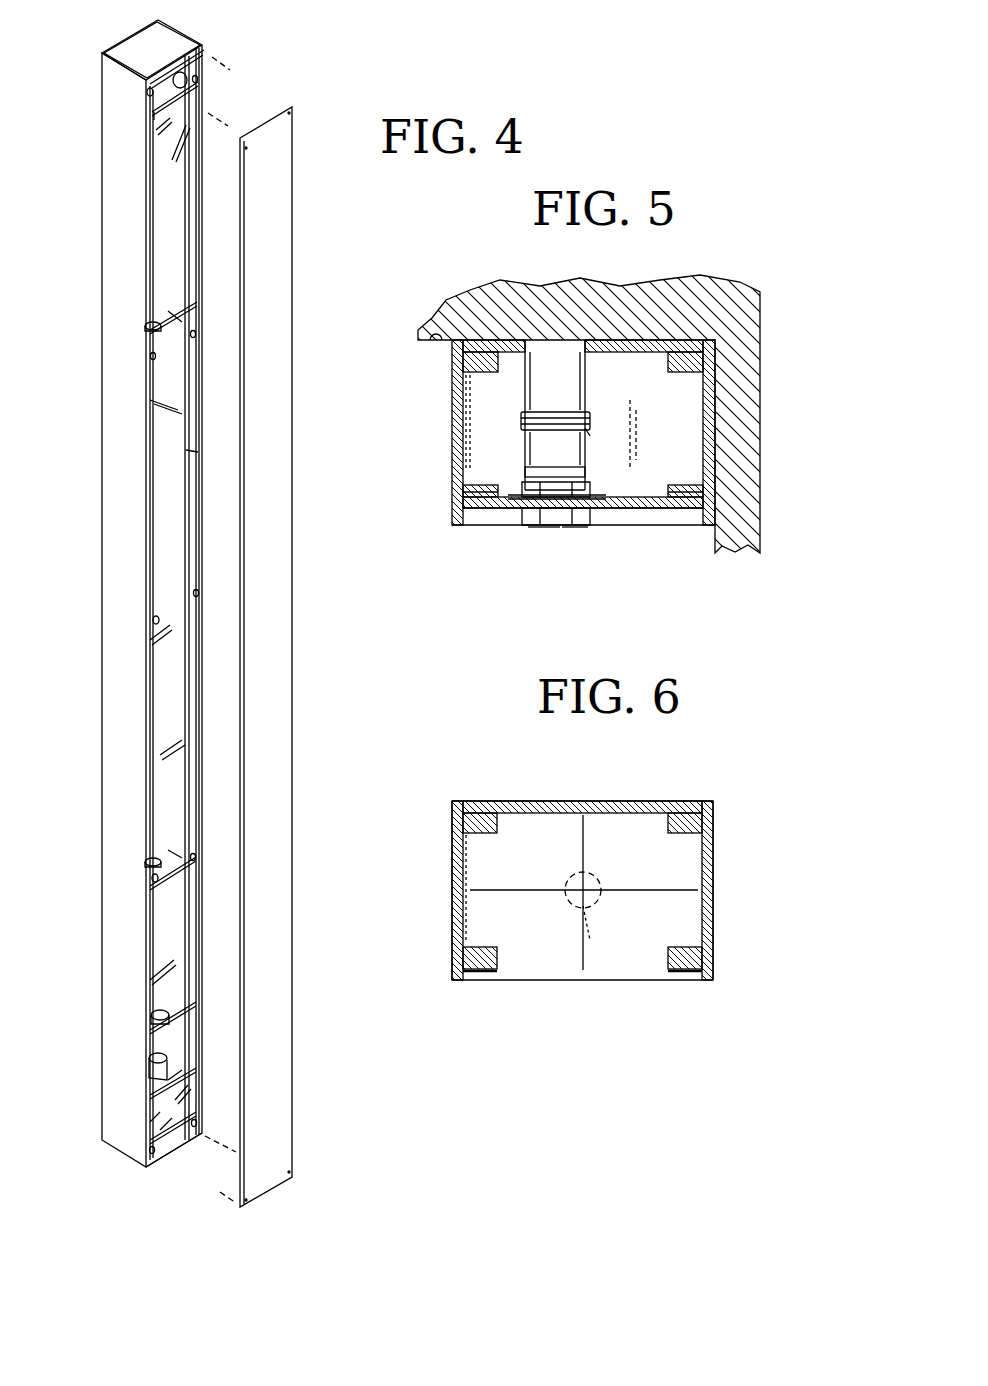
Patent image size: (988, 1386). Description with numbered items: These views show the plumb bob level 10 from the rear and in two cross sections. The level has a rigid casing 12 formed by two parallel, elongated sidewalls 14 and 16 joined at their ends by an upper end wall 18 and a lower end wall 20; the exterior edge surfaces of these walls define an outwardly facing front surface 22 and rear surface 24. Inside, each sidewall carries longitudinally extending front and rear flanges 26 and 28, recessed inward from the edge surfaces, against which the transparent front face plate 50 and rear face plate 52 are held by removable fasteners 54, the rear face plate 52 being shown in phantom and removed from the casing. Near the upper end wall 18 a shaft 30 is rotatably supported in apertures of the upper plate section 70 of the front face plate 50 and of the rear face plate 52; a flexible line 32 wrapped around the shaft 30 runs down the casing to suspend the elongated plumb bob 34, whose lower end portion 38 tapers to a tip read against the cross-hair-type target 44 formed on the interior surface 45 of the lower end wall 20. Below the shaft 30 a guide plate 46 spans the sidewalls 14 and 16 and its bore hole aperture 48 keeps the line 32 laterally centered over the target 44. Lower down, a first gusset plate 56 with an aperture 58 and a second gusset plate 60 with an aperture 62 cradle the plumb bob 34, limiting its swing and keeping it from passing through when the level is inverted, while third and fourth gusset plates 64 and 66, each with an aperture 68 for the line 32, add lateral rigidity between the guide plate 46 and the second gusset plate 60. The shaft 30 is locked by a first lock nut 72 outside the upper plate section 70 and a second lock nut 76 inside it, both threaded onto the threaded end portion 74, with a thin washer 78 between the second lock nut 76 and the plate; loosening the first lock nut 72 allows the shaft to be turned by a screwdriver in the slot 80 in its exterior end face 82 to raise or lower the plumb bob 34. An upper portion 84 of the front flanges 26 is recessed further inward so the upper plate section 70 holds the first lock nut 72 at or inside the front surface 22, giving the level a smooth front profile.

In FIG. 4, the plumb bob level 10 is at (64, 406).
In FIG. 4, the casing 12 is at (102, 268).
In FIG. 6, the casing 12 is at (452, 957).
In FIG. 4, the sidewall 14 is at (200, 90).
In FIG. 5, the sidewall 14 is at (452, 432).
In FIG. 6, the sidewall 14 is at (452, 872).
In FIG. 4, the sidewall 16 is at (120, 138).
In FIG. 5, the sidewall 16 is at (712, 412).
In FIG. 6, the sidewall 16 is at (714, 880).
In FIG. 4, the upper end wall 18 is at (148, 27).
In FIG. 4, the lower end wall 20 is at (165, 1150).
In FIG. 6, the lower end wall 20 is at (620, 982).
In FIG. 4, the front surface 22 is at (118, 50).
In FIG. 5, the front surface 22 is at (450, 332).
In FIG. 6, the front surface 22 is at (458, 982).
In FIG. 4, the rear surface 24 is at (180, 60).
In FIG. 6, the rear surface 24 is at (457, 800).
In FIG. 5, the front flange 26 is at (483, 490).
In FIG. 6, the front flange 26 is at (490, 970).
In FIG. 4, the rear flange 28 is at (152, 918).
In FIG. 5, the rear flange 28 is at (470, 365).
In FIG. 6, the rear flange 28 is at (485, 815).
In FIG. 4, the shaft 30 is at (178, 80).
In FIG. 5, the shaft 30 is at (570, 378).
In FIG. 4, the line 32 is at (148, 228).
In FIG. 5, the line 32 is at (590, 418).
In FIG. 6, the plumb bob 34 is at (590, 897).
In FIG. 6, the lower end portion 38 is at (588, 912).
In FIG. 4, the cross-hair-type target 44 is at (160, 1125).
In FIG. 6, the cross-hair-type target 44 is at (527, 893).
In FIG. 6, the interior surface 45 is at (540, 960).
In FIG. 5, the guide plate 46 is at (505, 435).
In FIG. 5, the bore hole aperture 48 is at (588, 432).
In FIG. 5, the front face plate 50 is at (643, 508).
In FIG. 4, the rear face plate 52 is at (160, 710).
In FIG. 5, the rear face plate 52 is at (620, 345).
In FIG. 6, the rear face plate 52 is at (583, 800).
In FIG. 4, the fasteners 54 is at (150, 92).
In FIG. 4, the first gusset plate 56 is at (178, 1070).
In FIG. 4, the aperture 58 is at (165, 1080).
In FIG. 4, the second gusset plate 60 is at (168, 1010).
In FIG. 4, the aperture 62 is at (160, 1025).
In FIG. 4, the third gusset plate 64 is at (170, 310).
In FIG. 4, the fourth gusset plate 66 is at (170, 852).
In FIG. 4, the aperture 68 is at (150, 330).
In FIG. 5, the upper plate section 70 is at (675, 525).
In FIG. 5, the first lock nut 72 is at (533, 525).
In FIG. 5, the threaded end portion 74 is at (578, 468).
In FIG. 5, the second lock nut 76 is at (590, 485).
In FIG. 5, the washer 78 is at (603, 496).
In FIG. 5, the slot 80 is at (555, 530).
In FIG. 5, the exterior end face 82 is at (578, 530).
In FIG. 5, the upper portion 84 is at (478, 492).